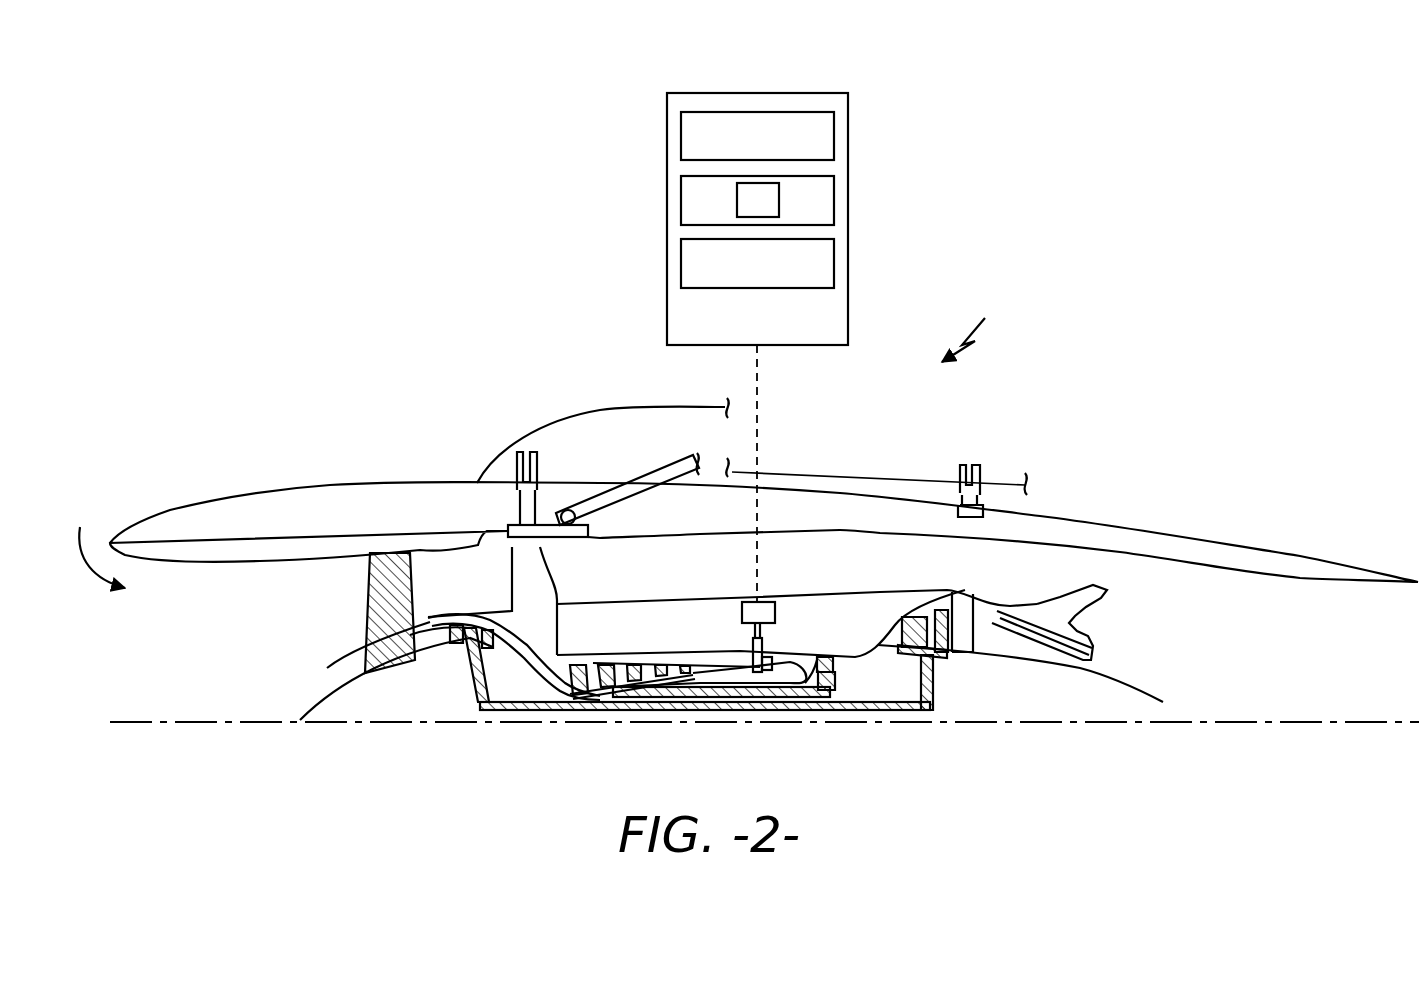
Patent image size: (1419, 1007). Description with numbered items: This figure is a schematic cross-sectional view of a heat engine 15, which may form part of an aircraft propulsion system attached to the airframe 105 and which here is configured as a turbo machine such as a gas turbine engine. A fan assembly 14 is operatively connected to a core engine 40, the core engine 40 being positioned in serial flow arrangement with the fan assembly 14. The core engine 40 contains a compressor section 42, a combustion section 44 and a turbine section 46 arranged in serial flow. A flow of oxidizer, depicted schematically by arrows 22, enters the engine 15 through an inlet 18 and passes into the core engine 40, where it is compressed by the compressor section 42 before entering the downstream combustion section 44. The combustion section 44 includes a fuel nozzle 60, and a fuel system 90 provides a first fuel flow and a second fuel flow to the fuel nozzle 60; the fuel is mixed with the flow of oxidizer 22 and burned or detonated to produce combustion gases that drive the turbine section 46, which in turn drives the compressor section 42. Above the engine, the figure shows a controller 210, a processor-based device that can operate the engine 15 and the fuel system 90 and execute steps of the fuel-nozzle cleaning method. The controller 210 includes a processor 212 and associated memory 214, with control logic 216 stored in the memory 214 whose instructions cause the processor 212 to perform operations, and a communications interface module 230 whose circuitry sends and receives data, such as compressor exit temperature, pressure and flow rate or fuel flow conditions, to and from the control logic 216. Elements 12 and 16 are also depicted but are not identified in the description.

The strut 12 is at (553, 587).
The fan assembly 14 is at (350, 587).
The heat engine 15 is at (983, 325).
The nacelle 16 is at (367, 480).
The inlet 18 is at (93, 541).
The flow of oxidizer 22 is at (345, 663).
The core engine 40 is at (683, 640).
The compressor section 42 is at (578, 647).
The combustion section 44 is at (790, 643).
The turbine section 46 is at (883, 622).
The fuel nozzle 60 is at (757, 672).
The fuel system 90 is at (740, 613).
The airframe 105 is at (652, 407).
The controller 210 is at (778, 93).
The processor 212 is at (785, 153).
The memory 214 is at (835, 191).
The control logic 216 is at (779, 197).
The communications interface module 230 is at (785, 280).